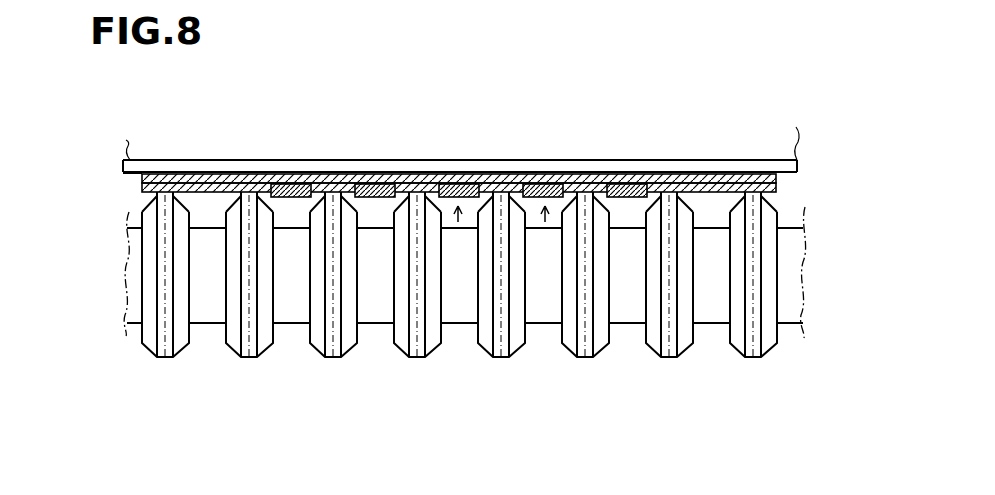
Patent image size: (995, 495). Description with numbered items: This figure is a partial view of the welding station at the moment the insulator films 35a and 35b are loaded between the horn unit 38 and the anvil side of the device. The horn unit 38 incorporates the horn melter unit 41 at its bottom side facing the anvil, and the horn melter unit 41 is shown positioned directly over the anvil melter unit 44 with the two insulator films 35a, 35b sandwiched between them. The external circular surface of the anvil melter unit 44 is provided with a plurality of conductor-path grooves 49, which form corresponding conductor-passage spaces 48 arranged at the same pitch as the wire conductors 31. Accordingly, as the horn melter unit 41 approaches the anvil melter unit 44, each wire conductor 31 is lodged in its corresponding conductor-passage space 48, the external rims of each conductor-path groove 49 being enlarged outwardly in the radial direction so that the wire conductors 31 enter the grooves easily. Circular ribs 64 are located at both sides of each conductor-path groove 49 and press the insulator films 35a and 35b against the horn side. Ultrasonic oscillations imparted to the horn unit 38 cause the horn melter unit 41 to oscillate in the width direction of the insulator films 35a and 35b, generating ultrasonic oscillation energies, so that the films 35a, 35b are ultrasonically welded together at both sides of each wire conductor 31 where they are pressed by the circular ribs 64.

The wire conductor 31 is at (306, 182).
The insulator film 35a is at (778, 177).
The insulator film 35b is at (778, 188).
The horn unit 38 is at (137, 140).
The horn melter unit 41 is at (127, 175).
The anvil melter unit 44 is at (127, 314).
The conductor-passage space 48 is at (458, 224).
The conductor-path groove 49 is at (222, 335).
The circular rib 64 is at (166, 358).